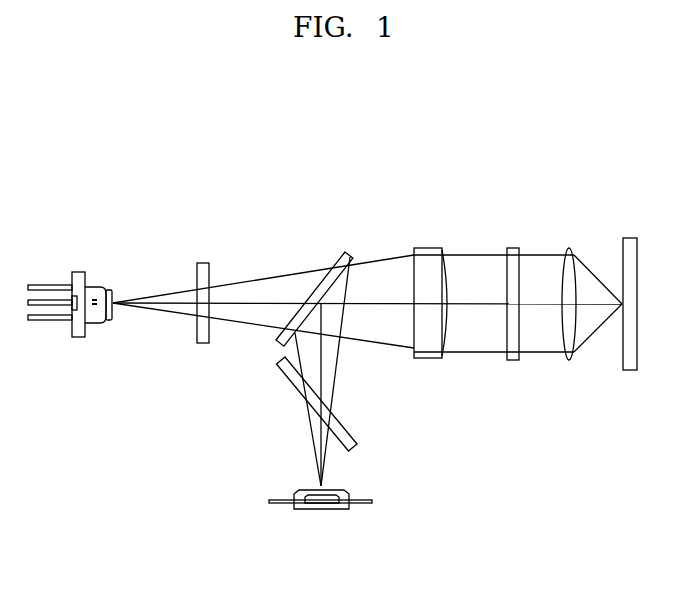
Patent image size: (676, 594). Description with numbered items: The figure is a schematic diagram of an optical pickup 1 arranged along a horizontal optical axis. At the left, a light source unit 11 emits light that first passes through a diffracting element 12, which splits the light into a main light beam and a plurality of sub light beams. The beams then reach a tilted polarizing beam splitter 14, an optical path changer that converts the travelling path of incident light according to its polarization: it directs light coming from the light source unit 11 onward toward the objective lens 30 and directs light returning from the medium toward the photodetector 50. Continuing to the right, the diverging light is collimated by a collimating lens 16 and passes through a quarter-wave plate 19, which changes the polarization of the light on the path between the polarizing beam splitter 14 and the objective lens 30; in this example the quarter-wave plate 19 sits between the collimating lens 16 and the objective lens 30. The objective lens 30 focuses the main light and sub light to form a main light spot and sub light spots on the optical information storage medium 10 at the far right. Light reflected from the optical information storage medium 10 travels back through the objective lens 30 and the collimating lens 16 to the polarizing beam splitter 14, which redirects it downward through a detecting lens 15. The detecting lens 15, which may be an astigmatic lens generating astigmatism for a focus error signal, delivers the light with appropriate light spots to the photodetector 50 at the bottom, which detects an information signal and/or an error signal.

The optical pickup 1 is at (370, 175).
The optical information storage medium 10 is at (630, 240).
The light source unit 11 is at (100, 289).
The diffracting element 12 is at (203, 263).
The polarizing beam splitter 14 is at (349, 252).
The detecting lens 15 is at (352, 437).
The collimating lens 16 is at (430, 250).
The quarter-wave plate 19 is at (514, 250).
The objective lens 30 is at (571, 250).
The photodetector 50 is at (320, 510).